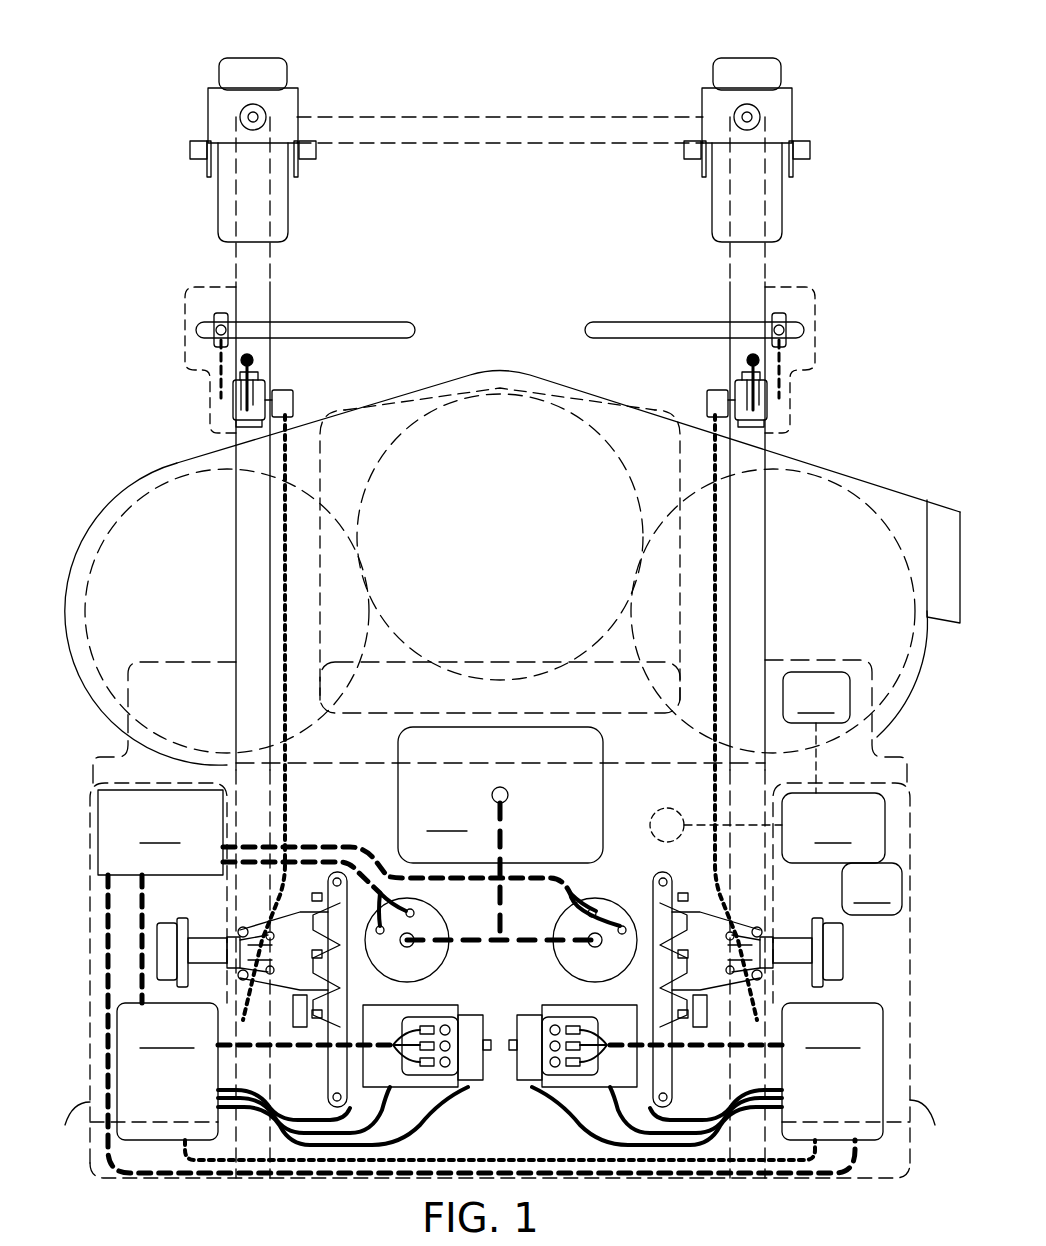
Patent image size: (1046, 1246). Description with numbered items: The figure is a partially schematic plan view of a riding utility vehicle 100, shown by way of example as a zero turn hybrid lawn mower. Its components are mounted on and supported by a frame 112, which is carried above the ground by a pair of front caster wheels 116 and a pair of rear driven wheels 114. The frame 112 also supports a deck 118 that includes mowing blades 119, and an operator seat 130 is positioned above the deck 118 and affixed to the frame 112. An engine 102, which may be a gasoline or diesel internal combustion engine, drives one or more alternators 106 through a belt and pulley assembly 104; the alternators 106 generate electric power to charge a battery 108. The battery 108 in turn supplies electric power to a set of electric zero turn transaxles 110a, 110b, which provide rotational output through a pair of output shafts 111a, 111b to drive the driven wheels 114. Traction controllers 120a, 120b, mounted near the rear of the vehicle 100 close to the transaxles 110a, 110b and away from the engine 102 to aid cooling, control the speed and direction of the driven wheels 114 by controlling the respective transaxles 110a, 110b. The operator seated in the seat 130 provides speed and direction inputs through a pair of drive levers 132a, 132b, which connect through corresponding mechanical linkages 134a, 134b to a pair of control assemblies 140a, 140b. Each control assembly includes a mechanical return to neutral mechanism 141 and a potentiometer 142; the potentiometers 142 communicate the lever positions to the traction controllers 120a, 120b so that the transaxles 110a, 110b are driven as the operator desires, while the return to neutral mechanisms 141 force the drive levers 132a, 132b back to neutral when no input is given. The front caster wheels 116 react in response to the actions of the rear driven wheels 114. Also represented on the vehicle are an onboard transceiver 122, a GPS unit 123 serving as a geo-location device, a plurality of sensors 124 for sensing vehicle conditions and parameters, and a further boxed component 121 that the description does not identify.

The riding utility vehicle 100 is at (143, 138).
The engine 102 is at (500, 795).
The belt and pulley assembly 104 is at (505, 832).
The alternators 106 is at (430, 958).
The battery 108 is at (476, 981).
The electric zero turn transaxle 110a is at (738, 1060).
The electric zero turn transaxle 110b is at (262, 1060).
The output shaft 111a is at (810, 925).
The output shaft 111b is at (190, 925).
The frame 112 is at (236, 272).
The driven wheels 114 is at (503, 1129).
The caster wheels 116 is at (253, 58).
The deck 118 is at (182, 462).
The mowing blades 119 is at (135, 505).
The traction controller 120a is at (832, 1071).
The traction controller 120b is at (167, 1071).
The control module 121 is at (833, 828).
The onboard transceiver 122 is at (816, 732).
The GPS unit 123 is at (872, 889).
The sensors 124 is at (652, 815).
The operator seat 130 is at (615, 713).
The drive lever 132a is at (617, 322).
The drive lever 132b is at (383, 322).
The mechanical linkage 134a is at (785, 362).
The mechanical linkage 134b is at (215, 362).
The control assembly 140a is at (812, 398).
The control assembly 140b is at (188, 398).
The return to neutral mechanism 141 is at (256, 364).
The potentiometer 142 is at (293, 400).